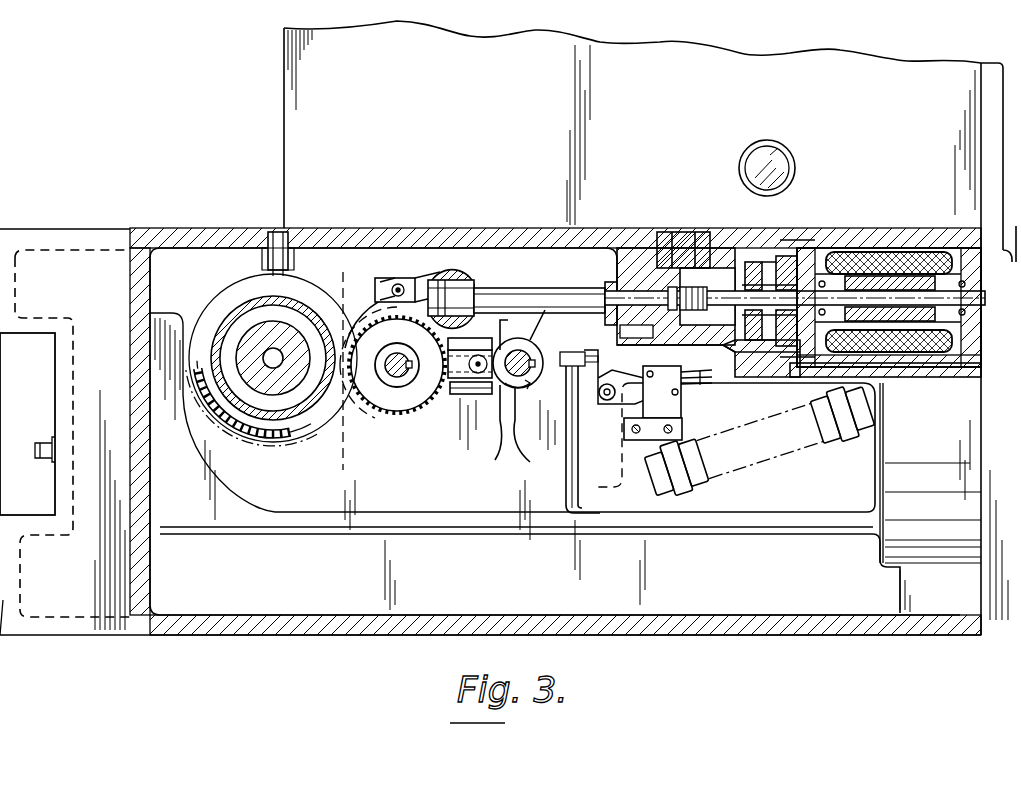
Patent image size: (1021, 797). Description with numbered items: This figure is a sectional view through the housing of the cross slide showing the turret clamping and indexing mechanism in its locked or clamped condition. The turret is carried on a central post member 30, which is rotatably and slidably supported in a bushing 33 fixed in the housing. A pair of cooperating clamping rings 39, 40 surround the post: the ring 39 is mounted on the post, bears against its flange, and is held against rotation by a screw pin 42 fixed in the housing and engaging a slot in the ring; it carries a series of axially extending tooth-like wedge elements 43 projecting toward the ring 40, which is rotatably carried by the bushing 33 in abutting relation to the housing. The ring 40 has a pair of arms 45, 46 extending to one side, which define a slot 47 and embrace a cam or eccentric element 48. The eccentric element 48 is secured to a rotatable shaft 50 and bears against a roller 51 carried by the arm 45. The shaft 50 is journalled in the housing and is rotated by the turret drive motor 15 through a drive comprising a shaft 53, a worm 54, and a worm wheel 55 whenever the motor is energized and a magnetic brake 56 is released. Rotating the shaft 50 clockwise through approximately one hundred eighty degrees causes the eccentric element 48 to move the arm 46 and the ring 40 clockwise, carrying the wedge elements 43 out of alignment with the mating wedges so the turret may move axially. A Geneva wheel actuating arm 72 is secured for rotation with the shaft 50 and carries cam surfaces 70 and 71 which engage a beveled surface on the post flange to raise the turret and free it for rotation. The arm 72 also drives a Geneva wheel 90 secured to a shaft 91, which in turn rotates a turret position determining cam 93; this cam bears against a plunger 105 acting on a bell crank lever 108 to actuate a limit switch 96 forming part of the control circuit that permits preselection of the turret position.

The turret drive motor 15 is at (882, 205).
The central post member 30 is at (246, 345).
The bushing 33 is at (245, 312).
The clamping ring 39 is at (280, 437).
The clamping ring 40 is at (298, 436).
The screw pin 42 is at (272, 274).
The wedge elements 43 is at (240, 418).
The arm 45 is at (357, 284).
The arm 46 is at (340, 402).
The slot 47 is at (358, 330).
The eccentric element 48 is at (405, 384).
The rotatable shaft 50 is at (400, 358).
The roller 51 is at (400, 280).
The shaft 53 is at (560, 292).
The worm 54 is at (424, 284).
The worm wheel 55 is at (446, 386).
The magnetic brake 56 is at (742, 256).
The cam surface 70 is at (480, 388).
The cam surface 71 is at (505, 343).
The Geneva wheel actuating arm 72 is at (500, 400).
The Geneva wheel 90 is at (498, 432).
The shaft 91 is at (527, 358).
The turret position determining cam 93 is at (536, 380).
The limit switch 96 is at (686, 398).
The plunger 105 is at (590, 352).
The bell crank lever 108 is at (600, 395).